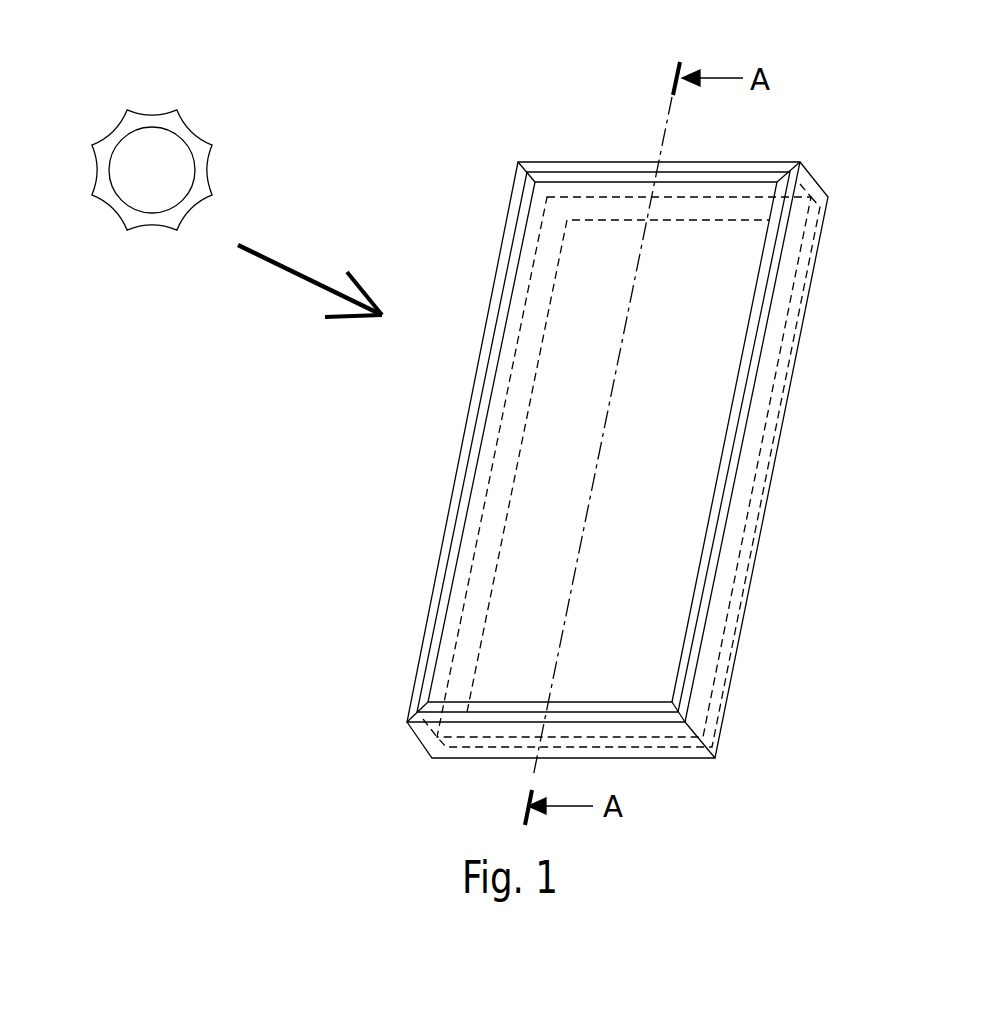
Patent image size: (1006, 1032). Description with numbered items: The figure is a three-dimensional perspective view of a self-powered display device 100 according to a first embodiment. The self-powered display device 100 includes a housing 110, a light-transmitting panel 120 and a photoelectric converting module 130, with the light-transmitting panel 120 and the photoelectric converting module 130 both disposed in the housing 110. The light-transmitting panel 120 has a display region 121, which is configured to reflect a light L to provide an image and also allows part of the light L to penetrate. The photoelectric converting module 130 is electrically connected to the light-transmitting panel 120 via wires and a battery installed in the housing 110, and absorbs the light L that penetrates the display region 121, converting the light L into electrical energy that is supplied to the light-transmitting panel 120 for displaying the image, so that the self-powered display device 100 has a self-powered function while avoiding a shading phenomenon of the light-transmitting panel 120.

The self-powered display device 100 is at (694, 400).
The housing 110 is at (823, 190).
The light-transmitting panel 120 is at (596, 170).
The display region 121 is at (624, 210).
The photoelectric converting module 130 is at (778, 378).
The light L is at (298, 272).